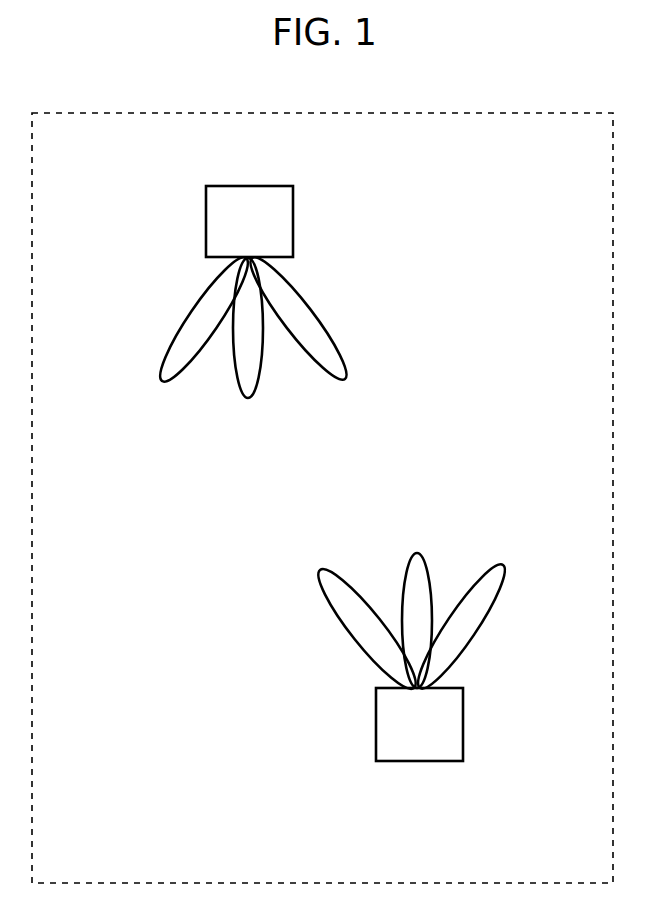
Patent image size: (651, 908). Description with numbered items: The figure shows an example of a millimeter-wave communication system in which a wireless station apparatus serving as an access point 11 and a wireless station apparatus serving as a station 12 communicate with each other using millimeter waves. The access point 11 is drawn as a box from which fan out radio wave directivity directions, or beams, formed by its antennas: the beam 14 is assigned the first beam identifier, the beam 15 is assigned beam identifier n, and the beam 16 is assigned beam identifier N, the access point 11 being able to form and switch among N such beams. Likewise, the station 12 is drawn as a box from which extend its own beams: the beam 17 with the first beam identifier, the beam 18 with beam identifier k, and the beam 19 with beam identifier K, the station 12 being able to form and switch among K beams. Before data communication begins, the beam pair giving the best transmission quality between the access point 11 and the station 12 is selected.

The wireless station apparatus (access point) 11 is at (287, 190).
The wireless station apparatus (STA) 12 is at (463, 712).
The radio wave directivity direction (beam) 14 is at (178, 362).
The radio wave directivity direction (beam) 15 is at (260, 385).
The radio wave directivity direction (beam) 16 is at (325, 347).
The radio wave directivity direction (beam) 17 is at (328, 588).
The radio wave directivity direction (beam) 18 is at (430, 568).
The radio wave directivity direction (beam) 19 is at (503, 567).